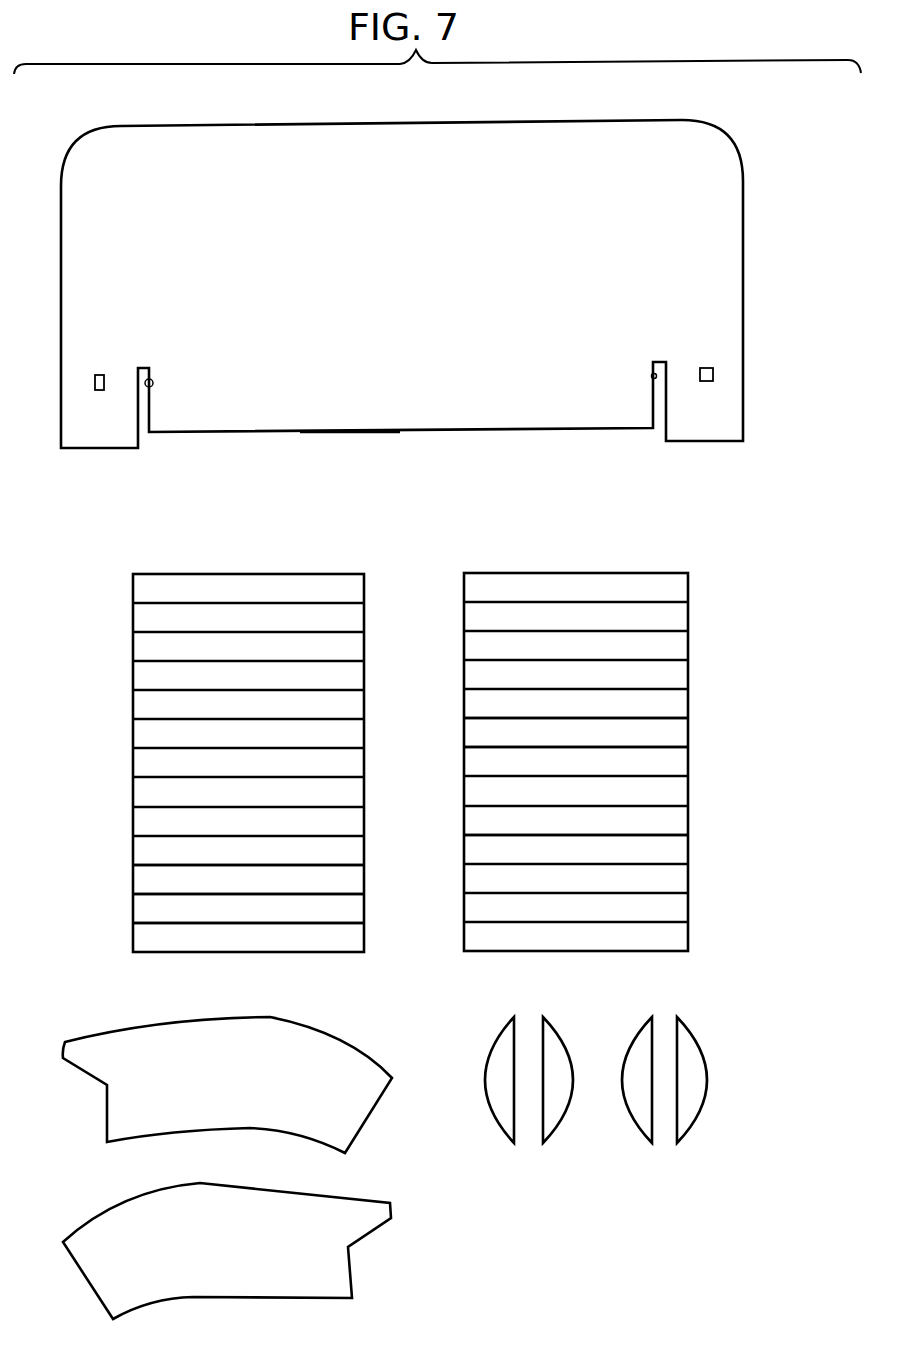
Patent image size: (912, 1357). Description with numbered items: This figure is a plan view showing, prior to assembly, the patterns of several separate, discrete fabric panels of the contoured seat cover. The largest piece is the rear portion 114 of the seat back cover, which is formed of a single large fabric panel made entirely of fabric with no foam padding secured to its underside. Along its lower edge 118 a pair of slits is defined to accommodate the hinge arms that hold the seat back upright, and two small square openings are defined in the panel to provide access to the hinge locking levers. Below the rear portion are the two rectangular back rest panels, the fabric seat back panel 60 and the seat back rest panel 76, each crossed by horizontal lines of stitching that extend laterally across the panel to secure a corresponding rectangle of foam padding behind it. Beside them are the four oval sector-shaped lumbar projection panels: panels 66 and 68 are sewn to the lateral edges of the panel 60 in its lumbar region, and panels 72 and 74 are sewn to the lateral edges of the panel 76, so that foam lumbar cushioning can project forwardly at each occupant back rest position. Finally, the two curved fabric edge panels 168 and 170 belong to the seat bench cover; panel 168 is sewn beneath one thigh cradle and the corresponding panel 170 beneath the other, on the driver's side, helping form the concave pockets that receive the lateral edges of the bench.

The rear portion 114 is at (421, 263).
The lower edge 118 is at (345, 434).
The fabric seat back panel 60 is at (151, 738).
The rectangular seat back rest panel 76 is at (560, 617).
The fabric edge panel 168 is at (257, 1084).
The fabric edge panel 170 is at (228, 1248).
The lumbar projection panel 68 is at (503, 1053).
The lumbar projection panel 66 is at (550, 1047).
The lumbar projection panel 74 is at (636, 1047).
The lumbar projection panel 72 is at (703, 1052).